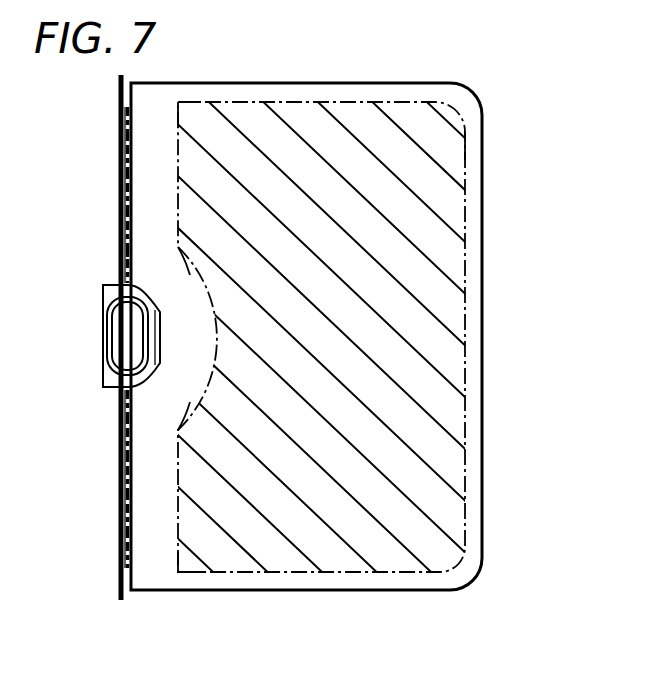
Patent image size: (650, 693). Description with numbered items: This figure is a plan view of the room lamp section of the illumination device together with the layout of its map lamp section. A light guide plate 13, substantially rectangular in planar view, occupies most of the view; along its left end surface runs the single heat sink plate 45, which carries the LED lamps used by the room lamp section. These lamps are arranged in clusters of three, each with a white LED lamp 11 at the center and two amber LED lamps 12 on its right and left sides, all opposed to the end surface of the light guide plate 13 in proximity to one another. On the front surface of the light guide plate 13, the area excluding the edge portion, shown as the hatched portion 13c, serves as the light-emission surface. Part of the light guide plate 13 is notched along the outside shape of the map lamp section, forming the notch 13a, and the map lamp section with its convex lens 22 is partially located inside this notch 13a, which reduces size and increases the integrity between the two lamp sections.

The white LED lamp 11 is at (118, 170).
The amber LED lamp 12 is at (118, 158).
The light guide plate 13 is at (380, 590).
The notch 13a is at (145, 290).
The hatched portion 13c is at (452, 142).
The lens 22 is at (110, 351).
The heat sink plate 45 is at (118, 103).